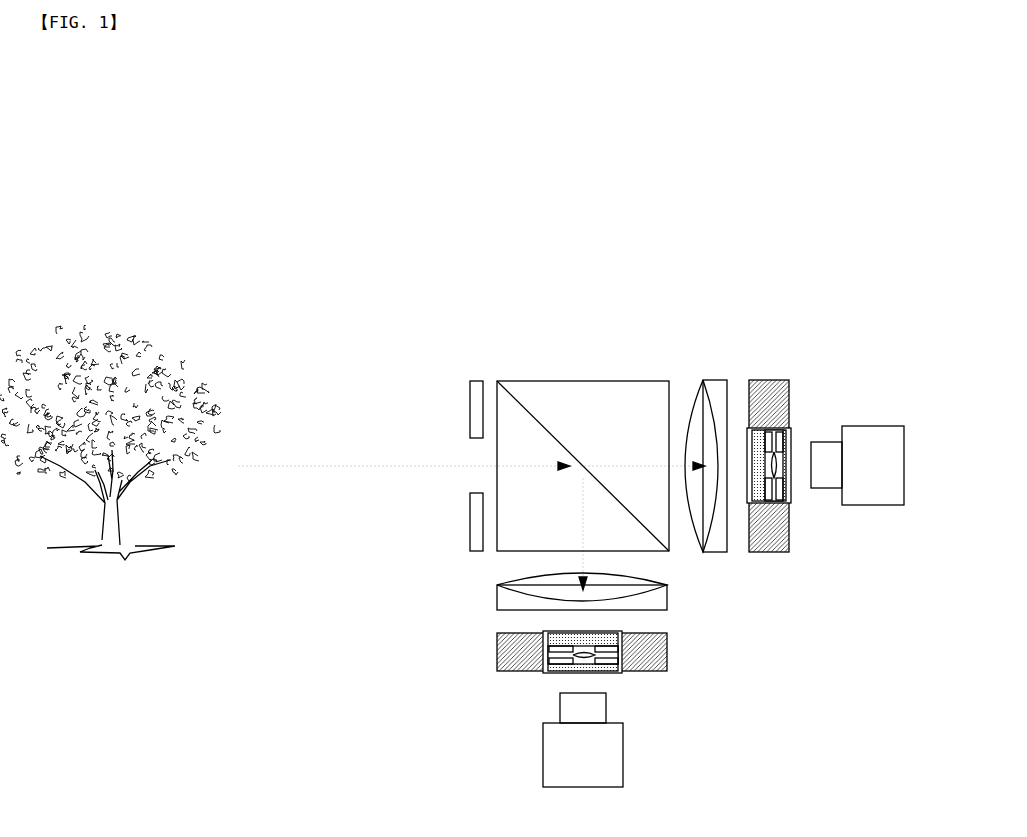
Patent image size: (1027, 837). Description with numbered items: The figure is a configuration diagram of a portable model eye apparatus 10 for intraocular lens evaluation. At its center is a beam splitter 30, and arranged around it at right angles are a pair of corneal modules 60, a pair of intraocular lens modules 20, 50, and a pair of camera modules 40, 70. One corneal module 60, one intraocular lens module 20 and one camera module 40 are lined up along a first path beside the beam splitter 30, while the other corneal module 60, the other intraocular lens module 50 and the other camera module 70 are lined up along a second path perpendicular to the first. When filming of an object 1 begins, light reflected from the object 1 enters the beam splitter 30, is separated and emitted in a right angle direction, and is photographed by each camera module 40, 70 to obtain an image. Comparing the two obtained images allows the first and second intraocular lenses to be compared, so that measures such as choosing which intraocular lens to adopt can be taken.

The object 1 is at (200, 372).
The portable model eye apparatus 10 is at (409, 611).
The intraocular lens module 20 is at (776, 553).
The beam splitter 30 is at (560, 390).
The camera module 40 is at (870, 505).
The intraocular lens module 50 is at (660, 652).
The corneal module 60 is at (660, 595).
The camera module 70 is at (612, 757).